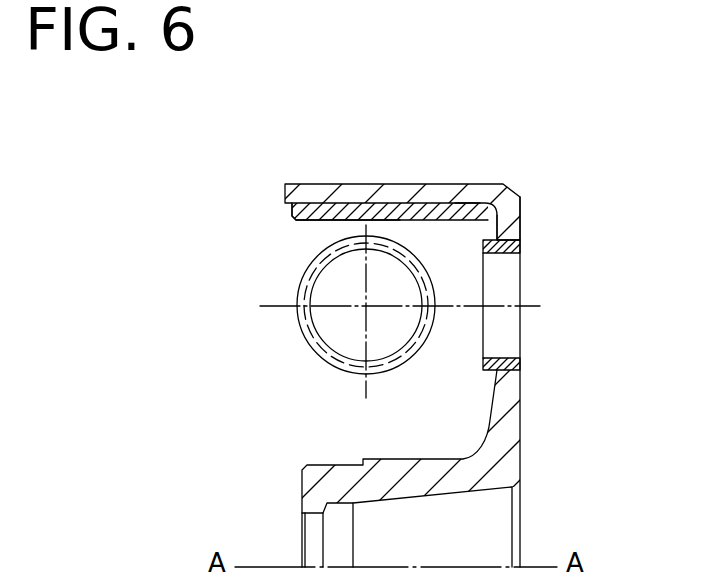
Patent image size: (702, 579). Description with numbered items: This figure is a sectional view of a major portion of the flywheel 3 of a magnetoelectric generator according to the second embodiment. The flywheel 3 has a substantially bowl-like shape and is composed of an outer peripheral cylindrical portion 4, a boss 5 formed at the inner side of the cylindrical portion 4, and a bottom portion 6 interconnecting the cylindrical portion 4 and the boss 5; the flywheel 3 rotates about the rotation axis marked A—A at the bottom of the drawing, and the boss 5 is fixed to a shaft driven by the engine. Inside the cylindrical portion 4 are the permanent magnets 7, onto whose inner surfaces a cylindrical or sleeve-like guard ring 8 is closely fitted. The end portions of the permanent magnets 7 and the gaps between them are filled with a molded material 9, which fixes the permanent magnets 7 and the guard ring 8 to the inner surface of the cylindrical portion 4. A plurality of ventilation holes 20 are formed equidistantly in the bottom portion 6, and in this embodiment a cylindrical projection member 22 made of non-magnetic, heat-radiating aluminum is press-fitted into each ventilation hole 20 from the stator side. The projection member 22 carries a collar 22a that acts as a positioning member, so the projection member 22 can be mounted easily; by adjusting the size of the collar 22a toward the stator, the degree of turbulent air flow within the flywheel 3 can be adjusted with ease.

The flywheel 3 is at (348, 168).
The outer peripheral cylindrical portion 4 is at (375, 183).
The boss 5 is at (434, 478).
The bottom portion 6 is at (521, 420).
The permanent magnets 7 is at (340, 223).
The guard ring 8 is at (303, 222).
The molded material 9 is at (466, 200).
The ventilation holes 20 is at (337, 348).
The projection member 22 is at (350, 372).
The collar 22a is at (298, 318).